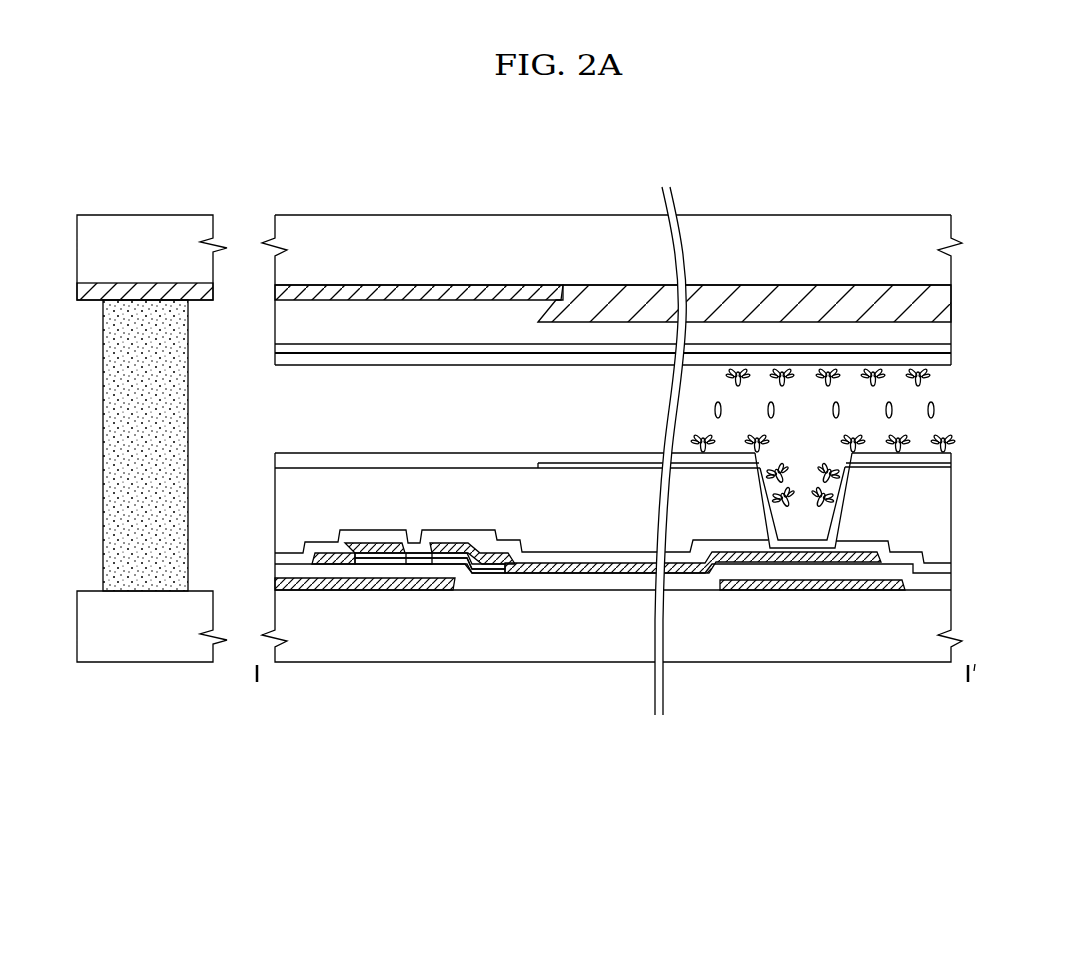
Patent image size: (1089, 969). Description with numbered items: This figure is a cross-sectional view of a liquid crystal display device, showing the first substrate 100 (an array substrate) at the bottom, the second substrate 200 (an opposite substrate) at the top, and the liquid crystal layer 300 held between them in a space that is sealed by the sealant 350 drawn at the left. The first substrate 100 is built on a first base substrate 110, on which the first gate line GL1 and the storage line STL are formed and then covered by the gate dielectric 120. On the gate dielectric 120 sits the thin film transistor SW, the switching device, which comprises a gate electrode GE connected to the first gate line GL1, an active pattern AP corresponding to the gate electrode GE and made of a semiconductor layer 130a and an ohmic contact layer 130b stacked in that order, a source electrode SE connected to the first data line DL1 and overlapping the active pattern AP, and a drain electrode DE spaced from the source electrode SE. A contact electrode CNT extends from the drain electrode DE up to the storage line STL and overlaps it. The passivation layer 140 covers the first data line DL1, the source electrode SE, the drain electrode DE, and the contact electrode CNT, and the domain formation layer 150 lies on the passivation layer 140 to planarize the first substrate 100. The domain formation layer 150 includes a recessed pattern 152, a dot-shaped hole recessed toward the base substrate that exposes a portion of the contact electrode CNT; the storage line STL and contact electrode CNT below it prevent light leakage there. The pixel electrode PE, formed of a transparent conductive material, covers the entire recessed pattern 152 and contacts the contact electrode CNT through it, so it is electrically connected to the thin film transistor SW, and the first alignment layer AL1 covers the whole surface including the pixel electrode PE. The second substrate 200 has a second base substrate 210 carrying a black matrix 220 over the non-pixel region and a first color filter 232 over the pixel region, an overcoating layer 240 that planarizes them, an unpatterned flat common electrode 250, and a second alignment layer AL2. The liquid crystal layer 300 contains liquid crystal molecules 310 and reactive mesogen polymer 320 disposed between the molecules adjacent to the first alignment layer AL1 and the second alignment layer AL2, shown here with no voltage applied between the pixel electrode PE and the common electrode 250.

The sealant 350 is at (103, 441).
The second substrate 200 is at (672, 263).
The second base substrate 210 is at (955, 223).
The black matrix 220 is at (497, 287).
The first color filter 232 is at (598, 292).
The overcoating layer 240 is at (952, 325).
The common electrode 250 is at (952, 346).
The second alignment layer AL2 is at (650, 358).
The liquid crystal layer 300 is at (899, 411).
The reactive mesogen polymer 320 is at (945, 375).
The liquid crystal molecules 310 is at (935, 410).
The first substrate 100 is at (671, 608).
The first base substrate 110 is at (952, 607).
The gate dielectric 120 is at (952, 580).
The first gate line GL1 is at (303, 590).
The storage line STL is at (850, 590).
The first data line DL1 is at (330, 564).
The source electrode SE is at (362, 553).
The gate electrode GE is at (400, 562).
The drain electrode DE is at (437, 556).
The active pattern AP is at (462, 650).
The semiconductor layer 130a is at (478, 573).
The ohmic contact layer 130b is at (503, 573).
The thin film transistor SW is at (439, 662).
The passivation layer 140 is at (952, 566).
The domain formation layer 150 is at (952, 532).
The recessed pattern 152 is at (809, 525).
The contact electrode CNT is at (782, 562).
The pixel electrode PE is at (952, 465).
The first alignment layer AL1 is at (650, 451).